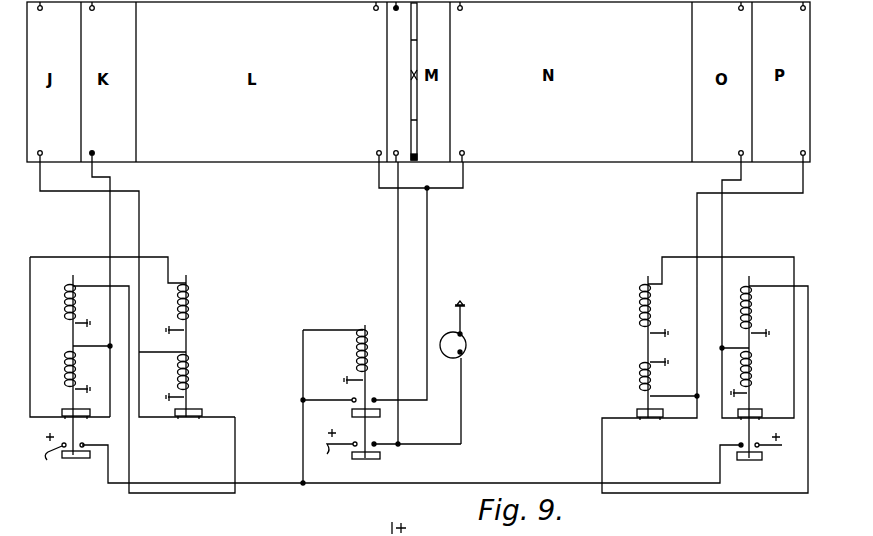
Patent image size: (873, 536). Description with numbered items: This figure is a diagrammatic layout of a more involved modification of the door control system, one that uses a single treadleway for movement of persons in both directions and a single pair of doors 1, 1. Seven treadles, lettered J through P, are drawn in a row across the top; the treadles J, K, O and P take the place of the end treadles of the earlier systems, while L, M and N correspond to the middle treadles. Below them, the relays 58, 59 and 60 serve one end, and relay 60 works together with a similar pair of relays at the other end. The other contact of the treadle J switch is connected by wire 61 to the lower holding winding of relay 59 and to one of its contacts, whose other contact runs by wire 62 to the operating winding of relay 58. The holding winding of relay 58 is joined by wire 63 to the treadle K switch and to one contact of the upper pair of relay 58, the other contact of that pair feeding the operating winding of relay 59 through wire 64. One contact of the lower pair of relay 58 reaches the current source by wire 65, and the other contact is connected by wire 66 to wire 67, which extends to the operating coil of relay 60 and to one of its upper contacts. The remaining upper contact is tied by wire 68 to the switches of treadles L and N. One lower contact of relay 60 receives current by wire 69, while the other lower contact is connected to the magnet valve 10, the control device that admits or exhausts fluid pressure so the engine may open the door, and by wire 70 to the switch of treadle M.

The door 1 is at (428, 108).
The control device 10 is at (468, 345).
The relay 58 is at (58, 342).
The relay 59 is at (218, 341).
The relay 60 is at (392, 359).
The wire 61 is at (143, 230).
The wire 62 is at (133, 440).
The wire 63 is at (108, 237).
The wire 64 is at (58, 257).
The wire 65 is at (63, 458).
The wire 66 is at (350, 484).
The wire 67 is at (303, 385).
The wire 68 is at (430, 277).
The wire 69 is at (391, 453).
The wire 70 is at (396, 276).